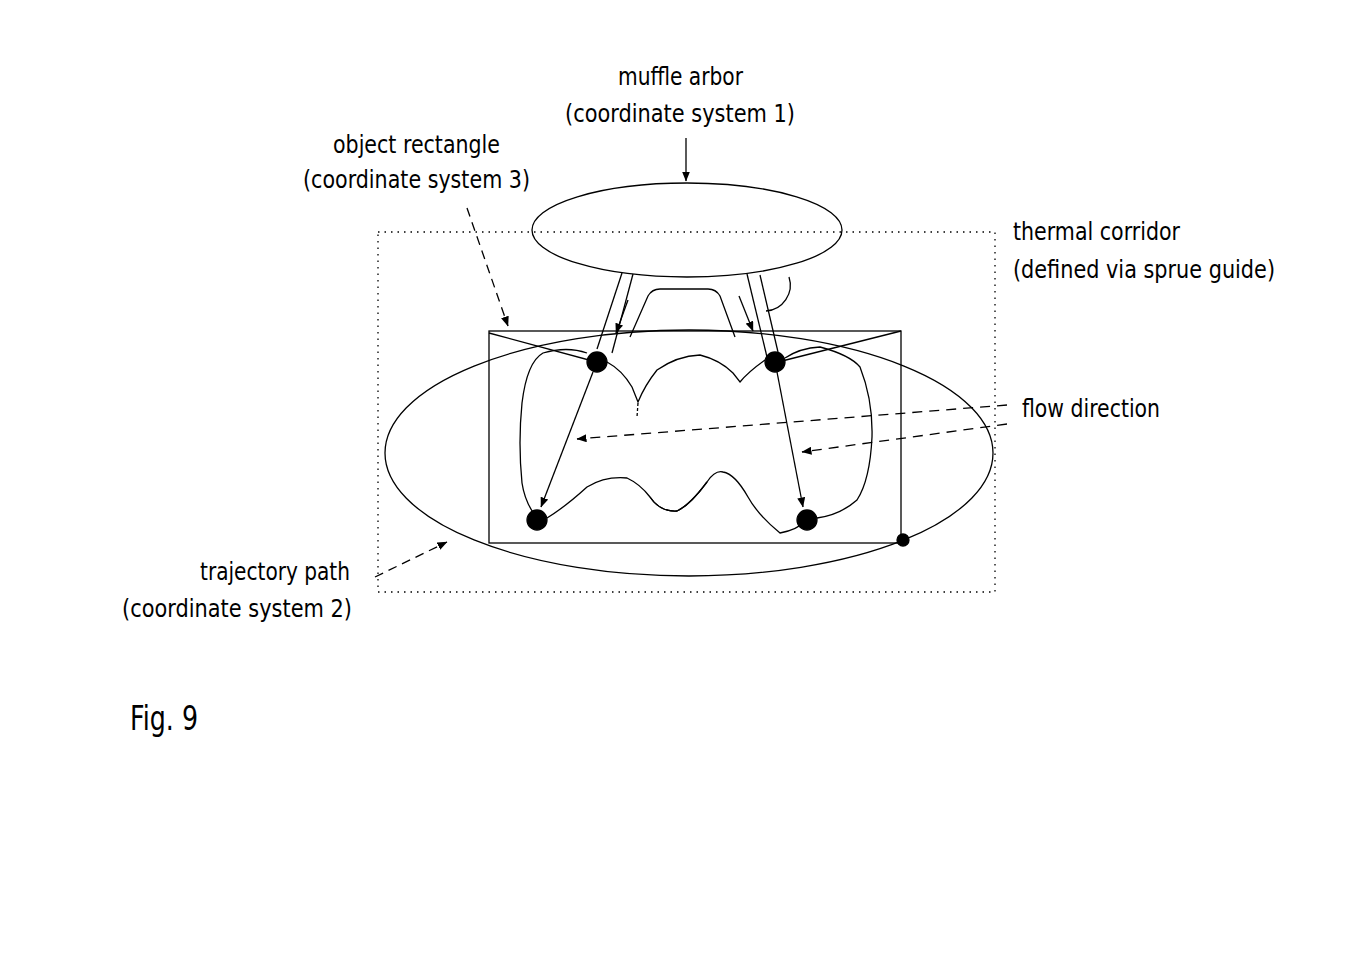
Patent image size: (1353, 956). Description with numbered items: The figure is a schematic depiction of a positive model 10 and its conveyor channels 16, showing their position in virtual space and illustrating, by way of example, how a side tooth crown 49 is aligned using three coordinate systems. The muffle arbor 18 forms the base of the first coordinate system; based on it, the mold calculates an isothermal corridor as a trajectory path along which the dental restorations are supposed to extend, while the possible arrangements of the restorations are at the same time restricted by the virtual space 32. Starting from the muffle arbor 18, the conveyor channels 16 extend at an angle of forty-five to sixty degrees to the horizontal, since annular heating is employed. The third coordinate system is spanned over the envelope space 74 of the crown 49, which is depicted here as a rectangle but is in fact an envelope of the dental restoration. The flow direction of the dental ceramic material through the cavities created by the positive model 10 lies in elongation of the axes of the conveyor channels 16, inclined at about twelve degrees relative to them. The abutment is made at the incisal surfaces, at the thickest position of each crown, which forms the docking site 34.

The muffle arbor 18 is at (738, 48).
The conveyor channels 16 is at (757, 327).
The docking site 34 is at (489, 334).
The virtual space 32 is at (997, 558).
The envelope space 74 is at (560, 543).
The positive model 10 is at (831, 500).
The side tooth crown 49 is at (683, 490).